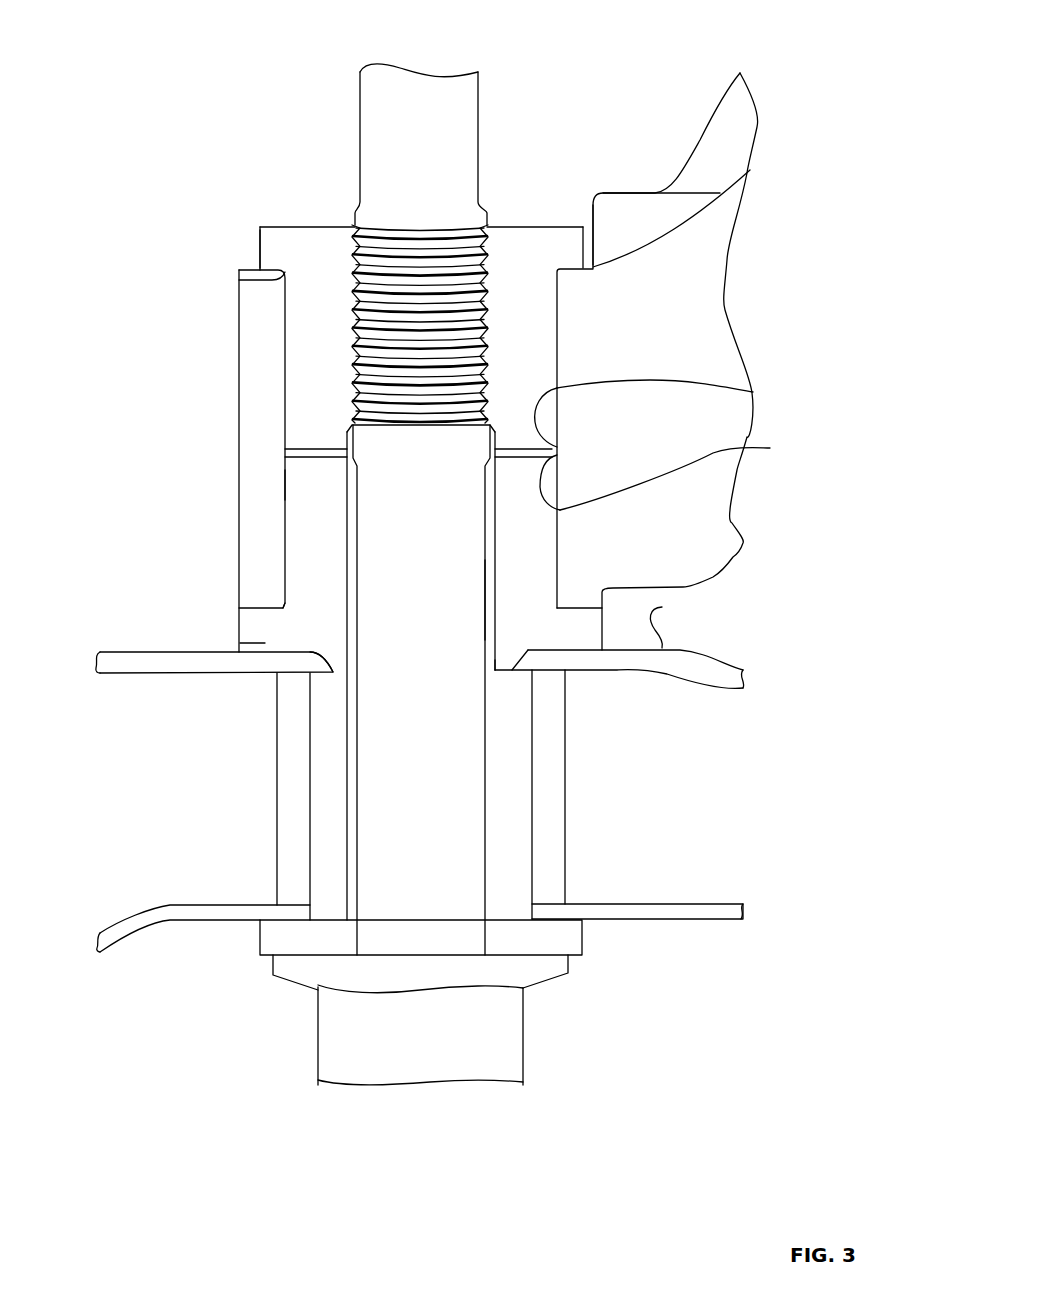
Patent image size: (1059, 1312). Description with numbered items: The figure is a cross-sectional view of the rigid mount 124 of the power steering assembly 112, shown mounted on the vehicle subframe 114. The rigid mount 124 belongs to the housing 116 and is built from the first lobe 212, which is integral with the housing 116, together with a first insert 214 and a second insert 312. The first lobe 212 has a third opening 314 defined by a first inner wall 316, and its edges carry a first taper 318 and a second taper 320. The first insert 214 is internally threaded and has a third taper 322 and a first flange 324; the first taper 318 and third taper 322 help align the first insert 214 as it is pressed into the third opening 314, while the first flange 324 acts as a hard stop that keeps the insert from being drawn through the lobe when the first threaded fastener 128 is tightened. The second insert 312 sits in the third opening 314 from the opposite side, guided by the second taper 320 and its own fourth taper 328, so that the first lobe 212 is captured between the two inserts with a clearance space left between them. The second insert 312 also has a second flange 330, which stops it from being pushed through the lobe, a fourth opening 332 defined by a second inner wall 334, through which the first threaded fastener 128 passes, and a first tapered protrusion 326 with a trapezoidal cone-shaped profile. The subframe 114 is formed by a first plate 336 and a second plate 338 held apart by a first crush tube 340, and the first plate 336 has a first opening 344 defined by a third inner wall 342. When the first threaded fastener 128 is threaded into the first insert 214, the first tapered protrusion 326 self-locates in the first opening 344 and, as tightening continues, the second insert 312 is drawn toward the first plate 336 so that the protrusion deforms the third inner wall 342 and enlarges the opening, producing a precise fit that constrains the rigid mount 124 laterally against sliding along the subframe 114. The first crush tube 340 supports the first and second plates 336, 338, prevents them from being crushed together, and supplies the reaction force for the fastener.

The power steering assembly 112 is at (675, 326).
The housing 116 is at (603, 145).
The rigid mount 124 is at (553, 200).
The first insert 214 is at (327, 243).
The first flange 324 is at (268, 250).
The first taper 318 is at (239, 280).
The first lobe 212 is at (239, 357).
The third opening 314 is at (278, 450).
The first inner wall 316 is at (285, 488).
The second insert 312 is at (331, 533).
The second taper 320 is at (283, 605).
The third taper 322 is at (753, 392).
The fourth taper 328 is at (770, 448).
The second inner wall 334 is at (497, 550).
The fourth opening 332 is at (490, 596).
The subframe 114 is at (662, 607).
The first plate 336 is at (183, 660).
The second flange 330 is at (240, 643).
The first tapered protrusion 326 is at (338, 672).
The first crush tube 340 is at (292, 850).
The second plate 338 is at (173, 915).
The third inner wall 342 is at (528, 655).
The first opening 344 is at (492, 672).
The first threaded fastener 128 is at (337, 1058).